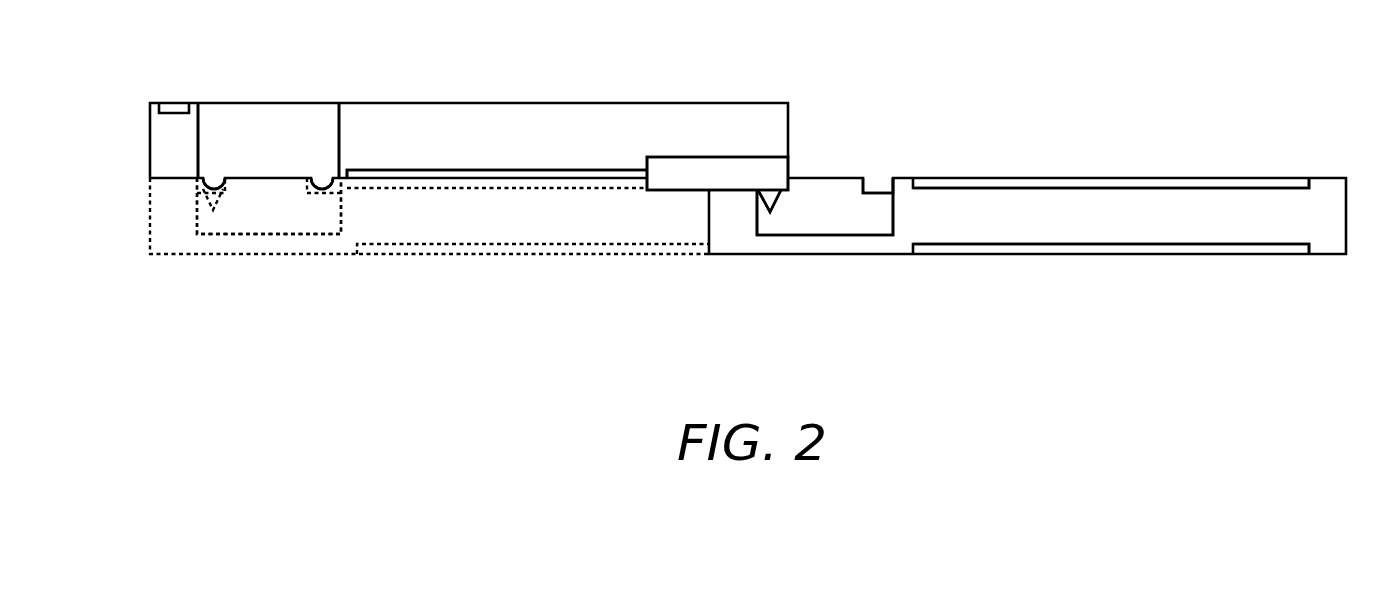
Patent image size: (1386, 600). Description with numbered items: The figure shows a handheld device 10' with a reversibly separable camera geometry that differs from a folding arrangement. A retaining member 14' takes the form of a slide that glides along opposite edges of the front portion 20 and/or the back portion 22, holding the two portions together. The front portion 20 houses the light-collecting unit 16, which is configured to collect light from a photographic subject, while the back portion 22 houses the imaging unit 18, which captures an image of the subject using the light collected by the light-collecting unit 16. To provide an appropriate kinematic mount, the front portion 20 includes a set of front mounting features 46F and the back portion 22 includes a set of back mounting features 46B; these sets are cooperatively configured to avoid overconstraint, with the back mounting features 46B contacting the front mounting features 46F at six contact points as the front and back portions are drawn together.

The handheld device 10' is at (481, 355).
The retaining member 14' is at (717, 173).
The light-collecting unit 16 is at (278, 151).
The imaging unit 18 is at (278, 218).
The front portion 20 is at (479, 153).
The back portion 22 is at (1038, 226).
The front mounting features 46F is at (214, 187).
The back mounting features 46B is at (770, 212).